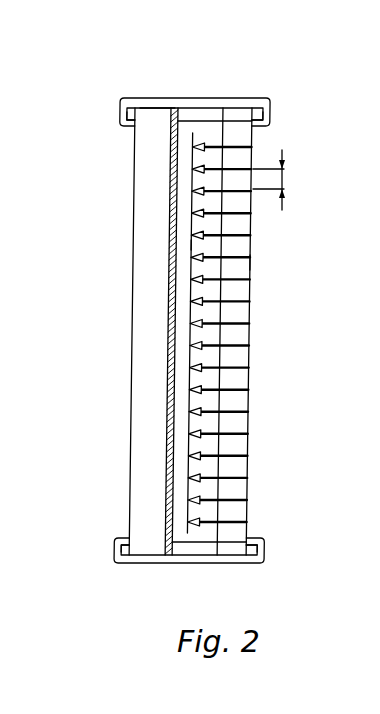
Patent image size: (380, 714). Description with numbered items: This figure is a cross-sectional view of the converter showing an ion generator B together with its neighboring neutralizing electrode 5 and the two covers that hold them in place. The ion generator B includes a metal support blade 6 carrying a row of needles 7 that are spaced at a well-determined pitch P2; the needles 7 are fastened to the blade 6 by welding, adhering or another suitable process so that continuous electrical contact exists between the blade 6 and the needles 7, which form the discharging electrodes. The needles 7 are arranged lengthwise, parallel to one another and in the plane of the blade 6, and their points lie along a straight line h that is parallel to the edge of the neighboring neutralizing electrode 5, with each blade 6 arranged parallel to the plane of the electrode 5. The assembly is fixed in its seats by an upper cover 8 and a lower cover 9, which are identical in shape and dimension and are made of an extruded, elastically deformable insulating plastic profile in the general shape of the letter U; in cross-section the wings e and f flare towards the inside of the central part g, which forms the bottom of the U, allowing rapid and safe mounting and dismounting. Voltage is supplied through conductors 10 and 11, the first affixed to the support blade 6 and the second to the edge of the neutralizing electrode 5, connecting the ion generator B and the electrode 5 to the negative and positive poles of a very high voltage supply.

The neutralizing electrode 5 is at (170, 205).
The metal support blade 6 is at (240, 335).
The needles 7 is at (237, 389).
The upper cover 8 is at (212, 97).
The lower cover 9 is at (188, 558).
The conductor 10 is at (247, 533).
The conductor 11 is at (128, 531).
The ion generator B is at (257, 263).
The pitch P2 is at (284, 182).
The wing e is at (257, 127).
The wing f is at (132, 125).
The central part g is at (158, 106).
The straight line h is at (193, 245).